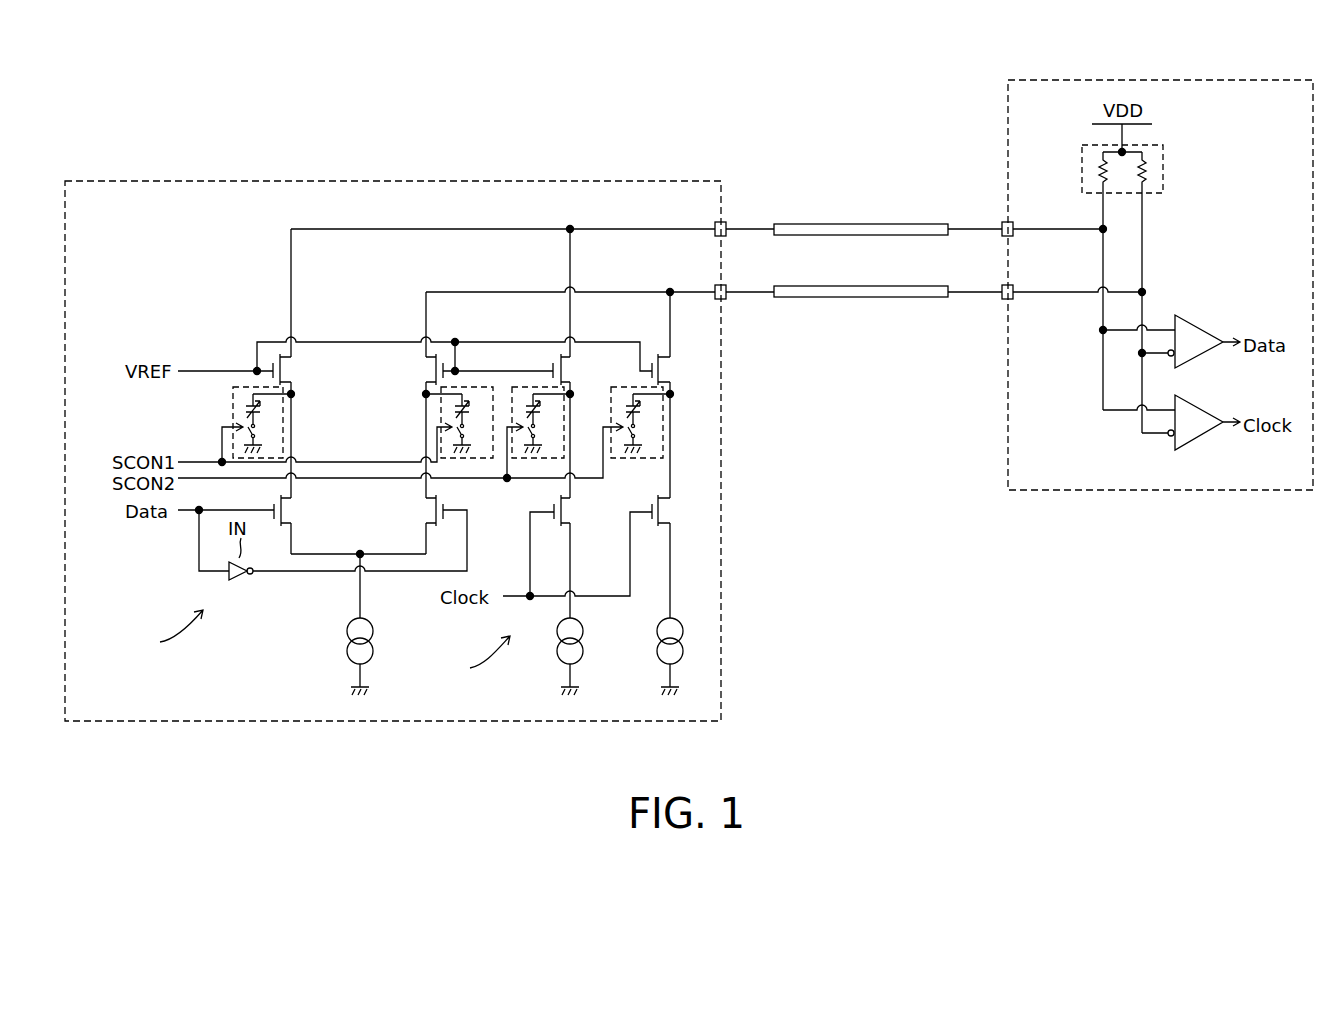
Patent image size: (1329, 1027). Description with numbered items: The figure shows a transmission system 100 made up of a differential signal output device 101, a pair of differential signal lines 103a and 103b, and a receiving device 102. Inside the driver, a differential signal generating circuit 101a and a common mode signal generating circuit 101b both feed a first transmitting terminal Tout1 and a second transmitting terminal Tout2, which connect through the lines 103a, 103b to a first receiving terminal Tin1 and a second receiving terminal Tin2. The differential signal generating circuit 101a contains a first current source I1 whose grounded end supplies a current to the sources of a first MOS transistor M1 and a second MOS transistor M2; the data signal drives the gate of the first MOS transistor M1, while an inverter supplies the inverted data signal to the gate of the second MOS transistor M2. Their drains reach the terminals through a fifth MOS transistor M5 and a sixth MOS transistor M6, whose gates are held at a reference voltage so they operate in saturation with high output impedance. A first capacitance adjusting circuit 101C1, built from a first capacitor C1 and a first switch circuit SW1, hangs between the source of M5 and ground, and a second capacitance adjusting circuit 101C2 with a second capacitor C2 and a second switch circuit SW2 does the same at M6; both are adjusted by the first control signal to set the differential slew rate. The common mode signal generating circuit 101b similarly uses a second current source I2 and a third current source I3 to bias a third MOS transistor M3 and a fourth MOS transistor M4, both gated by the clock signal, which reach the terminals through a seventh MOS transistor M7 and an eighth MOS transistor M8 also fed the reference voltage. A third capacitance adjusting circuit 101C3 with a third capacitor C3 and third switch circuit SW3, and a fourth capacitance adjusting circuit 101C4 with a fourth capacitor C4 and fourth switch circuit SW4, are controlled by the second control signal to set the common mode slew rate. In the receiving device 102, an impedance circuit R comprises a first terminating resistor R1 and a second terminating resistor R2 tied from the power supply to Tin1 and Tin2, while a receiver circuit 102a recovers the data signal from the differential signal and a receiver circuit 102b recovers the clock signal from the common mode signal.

The transmission system 100 is at (714, 768).
The differential signal output device 101 is at (395, 180).
The receiving device 102 is at (1160, 80).
The differential signal line 103a is at (862, 223).
The differential signal line 103b is at (862, 298).
The differential signal generating circuit 101a is at (159, 632).
The common mode signal generating circuit 101b is at (465, 656).
The first capacitance adjusting circuit 101C1 is at (234, 422).
The second capacitance adjusting circuit 101C2 is at (424, 434).
The third capacitance adjusting circuit 101C3 is at (521, 414).
The fourth capacitance adjusting circuit 101C4 is at (623, 414).
The receiver circuit 102a is at (1215, 305).
The receiver circuit 102b is at (1215, 384).
The first MOS transistor M1 is at (286, 500).
The second MOS transistor M2 is at (431, 500).
The third MOS transistor M3 is at (566, 500).
The fourth MOS transistor M4 is at (663, 500).
The fifth MOS transistor M5 is at (285, 360).
The sixth MOS transistor M6 is at (431, 360).
The seventh MOS transistor M7 is at (562, 353).
The eighth MOS transistor M8 is at (663, 360).
The first capacitor C1 is at (262, 405).
The second capacitor C2 is at (464, 412).
The third capacitor C3 is at (535, 412).
The fourth capacitor C4 is at (635, 412).
The first switch circuit SW1 is at (258, 434).
The second switch circuit SW2 is at (458, 437).
The third switch circuit SW3 is at (529, 437).
The fourth switch circuit SW4 is at (627, 437).
The first current source I1 is at (373, 640).
The second current source I2 is at (583, 640).
The third current source I3 is at (683, 640).
The impedance circuit R is at (1124, 162).
The first terminating resistor R1 is at (1100, 172).
The second terminating resistor R2 is at (1146, 172).
The first transmitting terminal Tout1 is at (724, 222).
The second transmitting terminal Tout2 is at (724, 300).
The first receiving terminal Tin1 is at (1003, 222).
The second receiving terminal Tin2 is at (1003, 300).